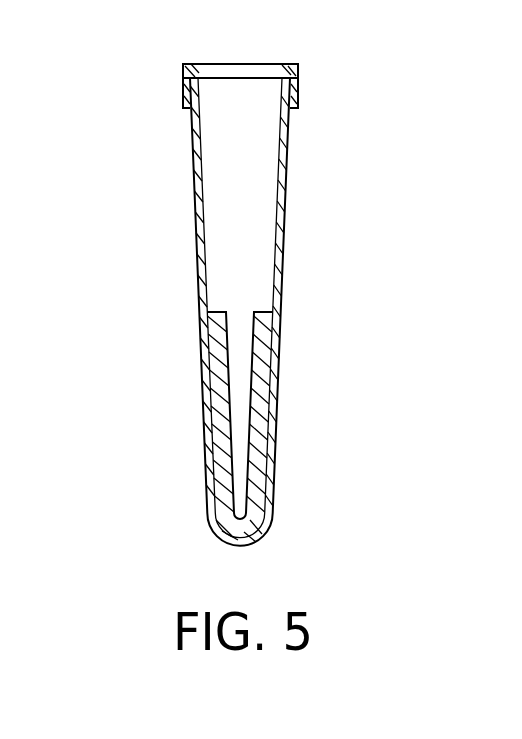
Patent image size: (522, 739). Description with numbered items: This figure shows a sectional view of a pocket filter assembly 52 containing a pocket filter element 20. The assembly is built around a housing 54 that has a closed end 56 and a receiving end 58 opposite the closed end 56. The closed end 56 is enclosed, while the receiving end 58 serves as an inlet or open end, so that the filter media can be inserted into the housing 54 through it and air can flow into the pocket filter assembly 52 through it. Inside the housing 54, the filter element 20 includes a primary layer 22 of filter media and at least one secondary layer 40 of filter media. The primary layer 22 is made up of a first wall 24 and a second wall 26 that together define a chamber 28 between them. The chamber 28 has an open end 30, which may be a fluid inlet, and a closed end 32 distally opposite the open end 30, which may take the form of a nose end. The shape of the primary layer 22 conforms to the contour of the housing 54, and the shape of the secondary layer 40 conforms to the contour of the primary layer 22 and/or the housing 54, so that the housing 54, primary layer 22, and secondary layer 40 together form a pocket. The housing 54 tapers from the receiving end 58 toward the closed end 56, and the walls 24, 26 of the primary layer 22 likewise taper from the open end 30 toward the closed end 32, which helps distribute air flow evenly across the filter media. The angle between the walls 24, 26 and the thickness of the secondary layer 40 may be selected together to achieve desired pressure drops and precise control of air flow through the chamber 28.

The pocket filter element 20 is at (268, 247).
The primary layer 22 is at (266, 342).
The first wall 24 is at (281, 176).
The second wall 26 is at (193, 190).
The chamber 28 is at (228, 200).
The open end 30 is at (286, 114).
The closed end 32 is at (230, 540).
The secondary layer 40 is at (262, 403).
The pocket filter assembly 52 is at (128, 113).
The housing 54 is at (287, 217).
The closed end 56 is at (267, 532).
The receiving end 58 is at (241, 64).